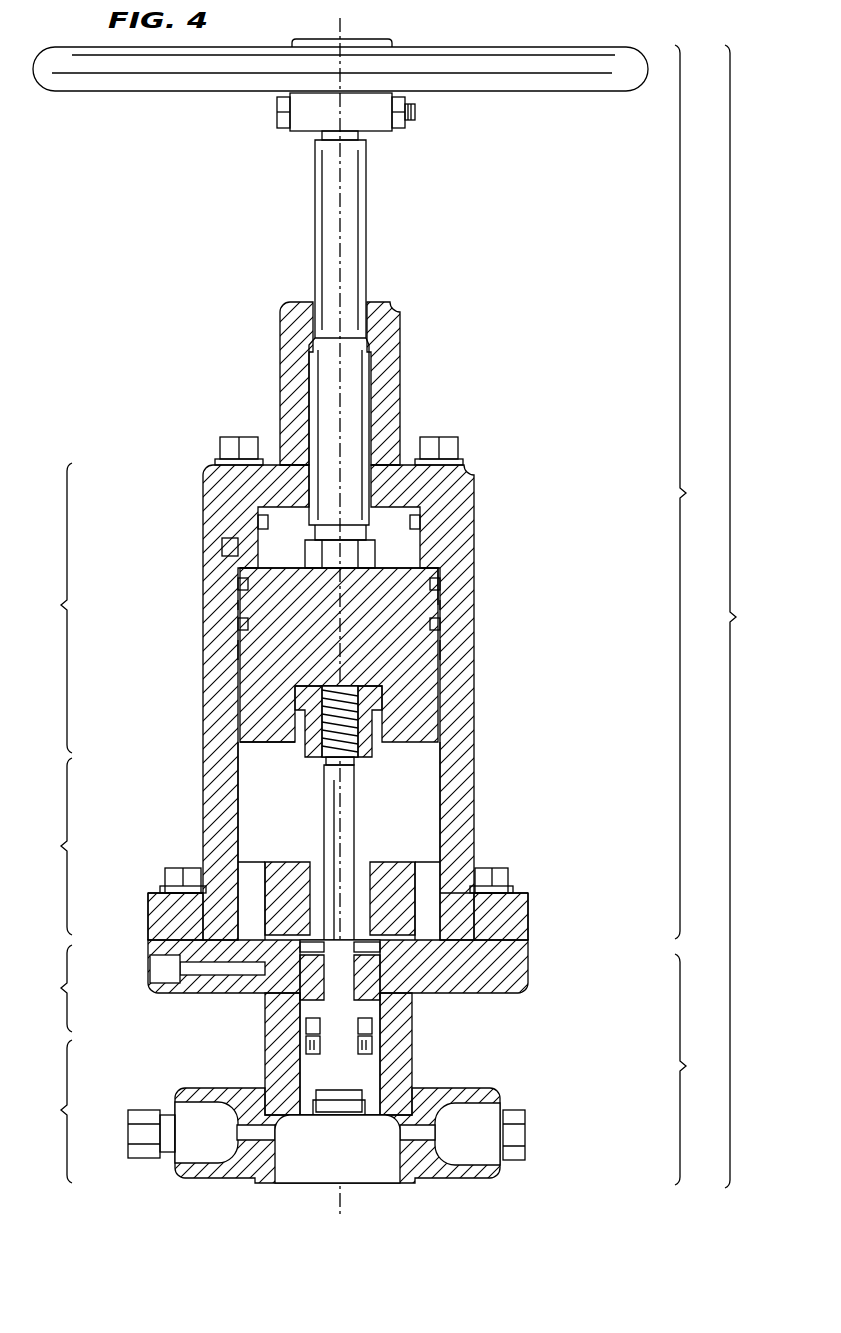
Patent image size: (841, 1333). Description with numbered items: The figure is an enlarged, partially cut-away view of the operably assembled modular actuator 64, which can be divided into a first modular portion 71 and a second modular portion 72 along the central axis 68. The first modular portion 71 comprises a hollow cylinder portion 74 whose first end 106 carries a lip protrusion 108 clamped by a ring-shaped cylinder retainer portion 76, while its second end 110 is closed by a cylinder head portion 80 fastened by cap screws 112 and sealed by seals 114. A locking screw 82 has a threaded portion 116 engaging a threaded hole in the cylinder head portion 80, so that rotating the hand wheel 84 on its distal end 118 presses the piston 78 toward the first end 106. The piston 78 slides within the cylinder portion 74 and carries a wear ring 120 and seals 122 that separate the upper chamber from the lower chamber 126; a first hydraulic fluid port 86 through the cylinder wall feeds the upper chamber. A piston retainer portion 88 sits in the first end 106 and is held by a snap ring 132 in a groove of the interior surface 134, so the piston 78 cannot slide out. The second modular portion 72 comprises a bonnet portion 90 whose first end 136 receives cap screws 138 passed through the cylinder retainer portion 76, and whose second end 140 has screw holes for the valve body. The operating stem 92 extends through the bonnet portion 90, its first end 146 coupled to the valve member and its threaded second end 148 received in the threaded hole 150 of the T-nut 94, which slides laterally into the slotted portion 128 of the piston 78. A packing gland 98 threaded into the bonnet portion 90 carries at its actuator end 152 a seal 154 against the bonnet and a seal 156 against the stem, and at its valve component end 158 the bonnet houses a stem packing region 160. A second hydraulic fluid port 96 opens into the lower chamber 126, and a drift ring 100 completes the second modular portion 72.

The modular actuator 64 is at (746, 616).
The central axis 68 is at (340, 30).
The first modular portion 71 is at (695, 492).
The second modular portion 72 is at (695, 1069).
The hollow cylinder portion 74 is at (476, 698).
The cylinder retainer portion 76 is at (150, 895).
The piston 78 is at (452, 676).
The cylinder head portion 80 is at (212, 486).
The locking screw 82 is at (315, 208).
The hand wheel 84 is at (512, 47).
The first hydraulic fluid port 86 is at (222, 547).
The piston retainer portion 88 is at (243, 895).
The bonnet portion 90 is at (412, 1062).
The operating stem 92 is at (356, 840).
The T-nut 94 is at (300, 742).
The second hydraulic fluid port 96 is at (160, 968).
The packing gland 98 is at (380, 972).
The drift ring 100 is at (450, 852).
The first end 106 is at (46, 846).
The lip protrusion 108 is at (178, 915).
The second end 110 is at (47, 608).
The cap screws 112 is at (440, 437).
The seals 114 is at (250, 520).
The threaded portion 116 is at (320, 397).
The distal end 118 is at (388, 140).
The wear ring 120 is at (448, 606).
The seals 122 is at (240, 586).
The lower chamber 126 is at (309, 804).
The slotted portion 128 is at (384, 690).
The snap ring 132 is at (500, 905).
The interior surface 134 is at (240, 790).
The first end 136 is at (46, 988).
The cap screws 138 is at (510, 877).
The second end 140 is at (272, 1111).
The first end 146 is at (330, 1060).
The second end 148 is at (330, 815).
The threaded hole 150 is at (372, 745).
The actuator end 152 is at (305, 925).
The seal 154 is at (290, 995).
The seal 156 is at (382, 948).
The valve component end 158 is at (412, 998).
The stem packing region 160 is at (400, 1030).